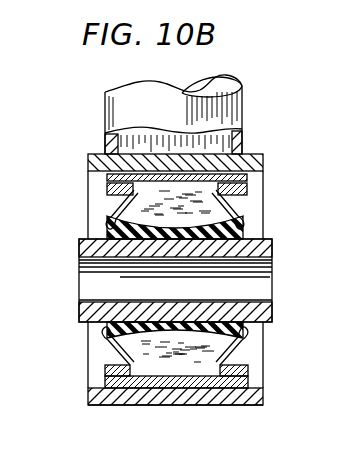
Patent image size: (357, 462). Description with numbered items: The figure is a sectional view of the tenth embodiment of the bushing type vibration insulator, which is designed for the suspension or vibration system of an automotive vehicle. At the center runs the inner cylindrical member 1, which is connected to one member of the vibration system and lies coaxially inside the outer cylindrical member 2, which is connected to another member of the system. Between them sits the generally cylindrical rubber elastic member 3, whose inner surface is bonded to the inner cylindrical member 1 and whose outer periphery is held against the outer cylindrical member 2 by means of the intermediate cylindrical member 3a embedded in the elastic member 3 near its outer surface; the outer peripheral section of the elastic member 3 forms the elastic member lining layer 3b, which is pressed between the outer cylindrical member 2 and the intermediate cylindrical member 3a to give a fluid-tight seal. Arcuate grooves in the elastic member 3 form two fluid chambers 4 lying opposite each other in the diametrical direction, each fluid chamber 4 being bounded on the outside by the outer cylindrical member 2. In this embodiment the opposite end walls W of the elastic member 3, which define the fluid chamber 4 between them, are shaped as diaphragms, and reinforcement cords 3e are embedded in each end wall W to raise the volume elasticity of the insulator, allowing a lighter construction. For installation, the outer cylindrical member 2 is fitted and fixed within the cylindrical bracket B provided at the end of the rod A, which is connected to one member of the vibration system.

The rod A is at (243, 104).
The elastic member lining layer 3b is at (102, 164).
The intermediate cylindrical member 3a is at (108, 189).
The reinforcement cords 3e is at (107, 359).
The elastic member 3 is at (248, 336).
The end walls W is at (102, 218).
The fluid chamber 4 is at (177, 279).
The inner cylindrical member 1 is at (85, 310).
The outer cylindrical member 2 is at (147, 400).
The cylindrical bracket B is at (190, 406).